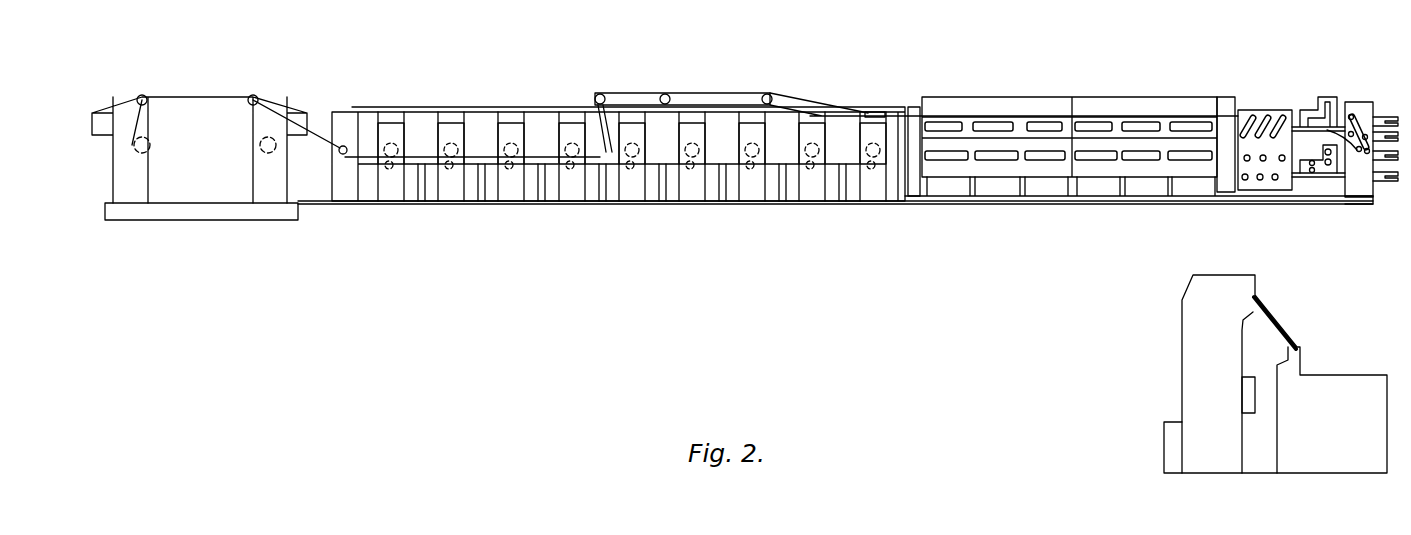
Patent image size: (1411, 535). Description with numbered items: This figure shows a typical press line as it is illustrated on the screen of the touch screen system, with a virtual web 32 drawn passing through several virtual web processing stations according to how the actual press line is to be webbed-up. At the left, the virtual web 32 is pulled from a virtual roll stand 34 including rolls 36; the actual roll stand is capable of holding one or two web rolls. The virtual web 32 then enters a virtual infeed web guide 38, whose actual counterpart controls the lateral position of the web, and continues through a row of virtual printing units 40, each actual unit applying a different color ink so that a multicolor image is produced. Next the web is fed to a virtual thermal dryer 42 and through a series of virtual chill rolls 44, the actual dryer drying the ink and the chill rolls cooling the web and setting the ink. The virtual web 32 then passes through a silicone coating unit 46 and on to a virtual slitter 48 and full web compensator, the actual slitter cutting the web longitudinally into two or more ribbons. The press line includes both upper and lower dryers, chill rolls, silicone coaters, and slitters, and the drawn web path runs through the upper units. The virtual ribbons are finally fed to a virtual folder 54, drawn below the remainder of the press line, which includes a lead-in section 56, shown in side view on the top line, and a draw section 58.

The virtual web 32 is at (197, 95).
The virtual roll stand 34 is at (187, 212).
The rolls 36 is at (153, 146).
The virtual infeed web guide 38 is at (342, 112).
The virtual printing units 40 is at (402, 137).
The virtual thermal dryer 42 is at (972, 97).
The virtual chill rolls 44 is at (1243, 110).
The silicone coating unit 46 is at (1327, 97).
The virtual slitter 48 is at (1363, 102).
The virtual folder 54 is at (1178, 330).
The lead-in section 56 is at (1362, 375).
The draw section 58 is at (1240, 272).